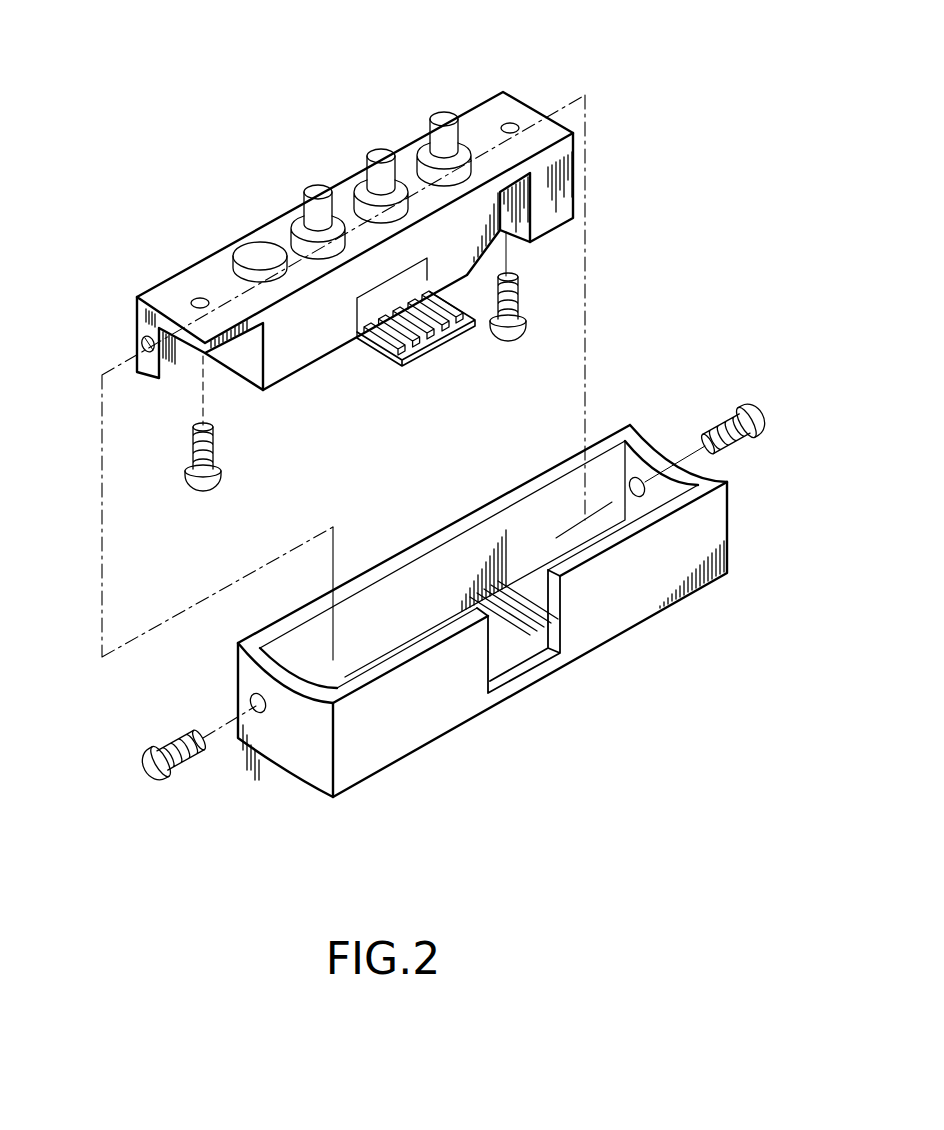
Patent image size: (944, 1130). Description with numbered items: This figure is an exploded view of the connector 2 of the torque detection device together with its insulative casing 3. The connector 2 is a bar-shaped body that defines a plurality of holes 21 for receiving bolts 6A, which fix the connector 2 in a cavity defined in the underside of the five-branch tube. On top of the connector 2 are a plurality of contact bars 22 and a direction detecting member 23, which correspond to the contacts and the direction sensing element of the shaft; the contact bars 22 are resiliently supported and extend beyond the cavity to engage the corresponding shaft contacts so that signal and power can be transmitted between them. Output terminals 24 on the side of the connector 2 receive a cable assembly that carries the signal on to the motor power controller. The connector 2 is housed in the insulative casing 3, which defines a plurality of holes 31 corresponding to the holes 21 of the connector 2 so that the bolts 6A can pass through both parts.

The connector 2 is at (497, 100).
The holes 21 is at (513, 126).
The contact bars 22 is at (318, 185).
The direction detecting member 23 is at (262, 245).
The output terminals 24 is at (430, 342).
The insulative casing 3 is at (618, 618).
The holes 31 is at (262, 714).
The bolts 6A is at (186, 458).